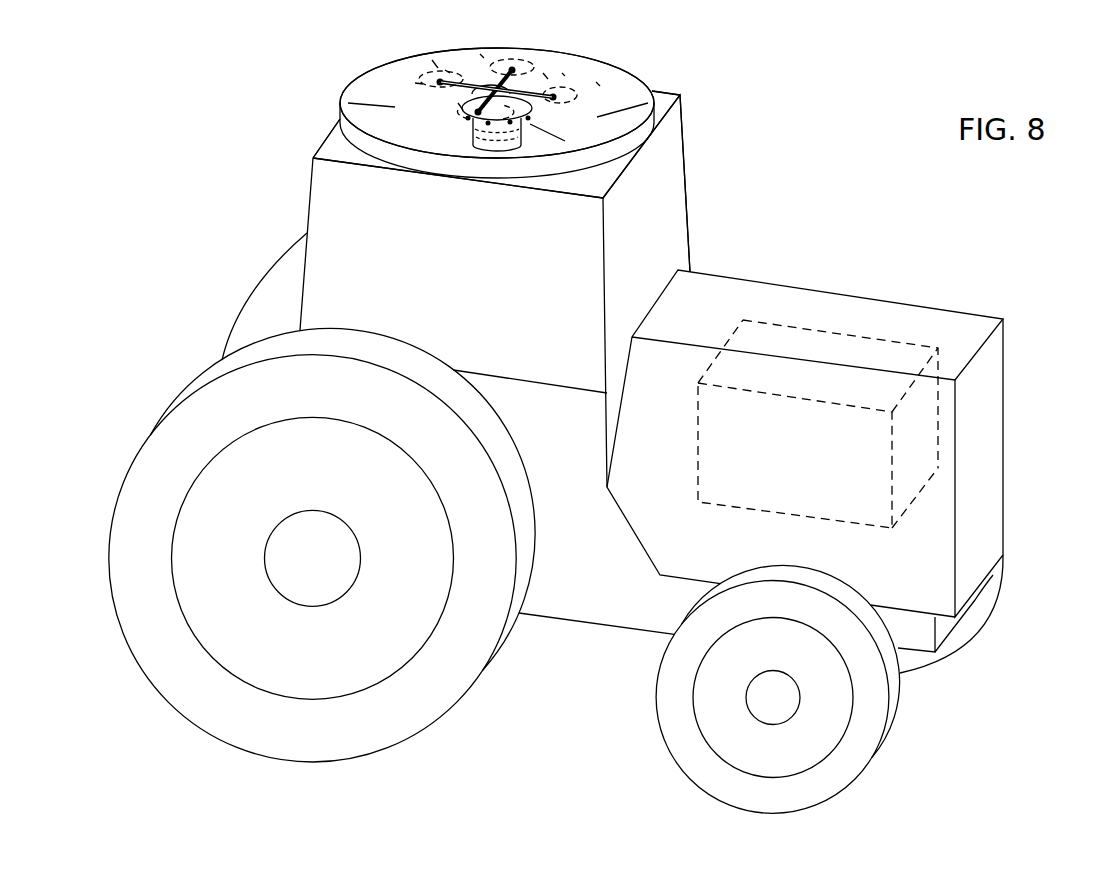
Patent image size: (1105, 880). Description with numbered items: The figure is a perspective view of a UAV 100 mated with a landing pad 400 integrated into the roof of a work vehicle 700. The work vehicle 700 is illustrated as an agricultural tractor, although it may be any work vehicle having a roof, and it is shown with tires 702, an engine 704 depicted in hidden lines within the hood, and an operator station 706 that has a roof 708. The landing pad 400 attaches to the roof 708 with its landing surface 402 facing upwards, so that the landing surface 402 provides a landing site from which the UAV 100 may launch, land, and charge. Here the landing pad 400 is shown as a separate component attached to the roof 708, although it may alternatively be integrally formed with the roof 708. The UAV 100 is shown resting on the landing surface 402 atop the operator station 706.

The UAV 100 is at (537, 56).
The landing pad 400 is at (647, 77).
The landing surface 402 is at (603, 78).
The work vehicle 700 is at (894, 249).
The tires 702 is at (415, 685).
The engine 704 is at (940, 433).
The operator station 706 is at (710, 193).
The roof 708 is at (336, 146).